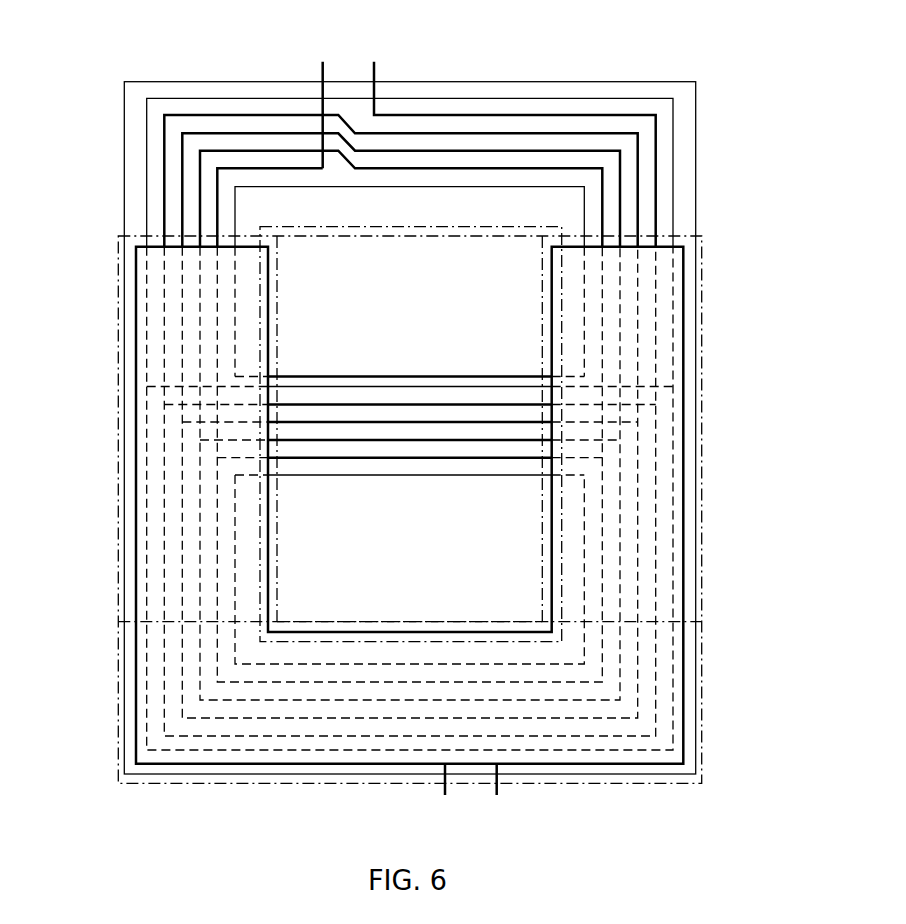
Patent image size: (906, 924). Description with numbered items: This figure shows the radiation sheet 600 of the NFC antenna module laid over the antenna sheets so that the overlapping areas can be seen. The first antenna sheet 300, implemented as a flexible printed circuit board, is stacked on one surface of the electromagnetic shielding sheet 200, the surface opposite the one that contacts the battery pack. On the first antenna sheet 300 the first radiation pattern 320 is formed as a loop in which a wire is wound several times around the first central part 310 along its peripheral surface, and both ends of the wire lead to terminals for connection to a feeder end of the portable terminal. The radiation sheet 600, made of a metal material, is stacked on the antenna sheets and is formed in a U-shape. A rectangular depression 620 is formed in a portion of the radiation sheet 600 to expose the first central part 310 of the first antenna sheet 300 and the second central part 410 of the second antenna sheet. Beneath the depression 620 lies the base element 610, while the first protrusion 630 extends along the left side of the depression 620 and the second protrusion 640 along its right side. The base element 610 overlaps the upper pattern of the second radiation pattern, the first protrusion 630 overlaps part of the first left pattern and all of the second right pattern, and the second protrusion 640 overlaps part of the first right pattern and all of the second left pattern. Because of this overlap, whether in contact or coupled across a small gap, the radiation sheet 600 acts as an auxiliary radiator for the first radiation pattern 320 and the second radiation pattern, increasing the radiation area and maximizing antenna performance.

The electromagnetic shielding sheet 200 is at (123, 138).
The first antenna sheet 300 is at (445, 404).
The first central part 310 is at (272, 205).
The first radiation pattern 320 is at (657, 170).
The second central part 410 is at (530, 553).
The radiation sheet 600 is at (687, 430).
The base element 610 is at (702, 686).
The depression 620 is at (457, 225).
The first protrusion 630 is at (118, 472).
The second protrusion 640 is at (702, 513).